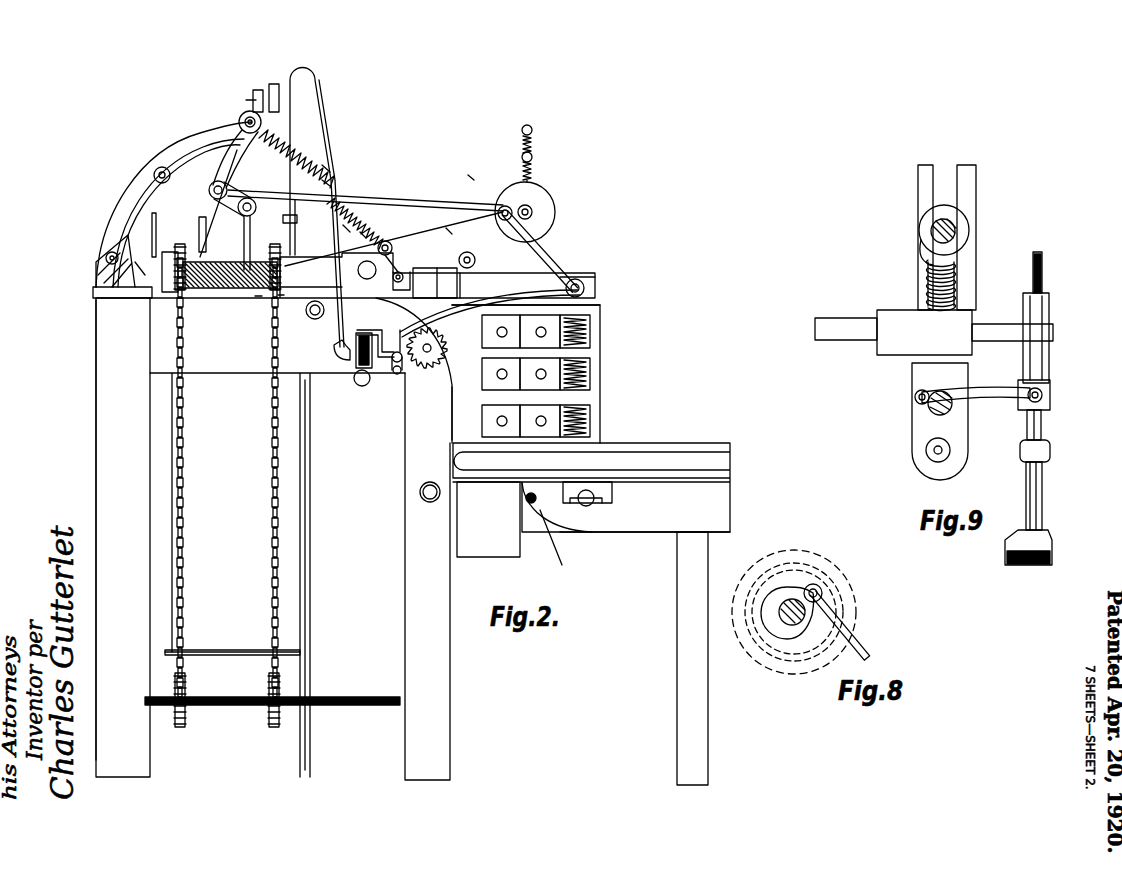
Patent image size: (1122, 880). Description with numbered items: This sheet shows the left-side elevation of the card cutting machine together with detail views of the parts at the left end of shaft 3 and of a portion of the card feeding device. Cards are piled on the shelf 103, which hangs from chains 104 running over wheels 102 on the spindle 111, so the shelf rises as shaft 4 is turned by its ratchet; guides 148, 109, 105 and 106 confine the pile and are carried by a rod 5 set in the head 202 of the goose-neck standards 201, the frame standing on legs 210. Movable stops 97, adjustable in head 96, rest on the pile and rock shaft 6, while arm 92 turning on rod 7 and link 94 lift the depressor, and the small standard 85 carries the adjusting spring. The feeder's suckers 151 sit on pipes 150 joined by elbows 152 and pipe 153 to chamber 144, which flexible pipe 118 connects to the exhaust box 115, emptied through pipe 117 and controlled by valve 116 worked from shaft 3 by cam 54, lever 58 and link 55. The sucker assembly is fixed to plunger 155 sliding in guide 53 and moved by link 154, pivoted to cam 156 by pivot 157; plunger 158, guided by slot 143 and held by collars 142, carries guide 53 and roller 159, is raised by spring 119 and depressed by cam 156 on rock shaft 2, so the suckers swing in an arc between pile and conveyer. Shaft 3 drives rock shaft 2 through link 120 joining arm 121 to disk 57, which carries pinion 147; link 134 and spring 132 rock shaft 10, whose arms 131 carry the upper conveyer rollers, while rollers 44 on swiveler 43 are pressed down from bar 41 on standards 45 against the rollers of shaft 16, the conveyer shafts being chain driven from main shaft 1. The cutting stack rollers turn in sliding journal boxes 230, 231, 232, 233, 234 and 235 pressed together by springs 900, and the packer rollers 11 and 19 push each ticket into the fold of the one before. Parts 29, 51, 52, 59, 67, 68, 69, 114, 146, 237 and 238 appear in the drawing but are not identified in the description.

In FIG. 2, the main shaft 1 is at (419, 495).
In FIG. 9, the rocking shaft 2 is at (932, 433).
In FIG. 2, the shaft 3 is at (532, 205).
In FIG. 8, the shaft 3 is at (792, 616).
In FIG. 2, the shaft 4 is at (316, 320).
In FIG. 2, the rod 5 is at (246, 118).
In FIG. 9, the rod 5 is at (960, 228).
In FIG. 2, the shaft 6 is at (156, 175).
In FIG. 2, the rod 7 is at (100, 258).
In FIG. 2, the rocker shaft 10 is at (280, 295).
In FIG. 2, the roller 11 is at (585, 506).
In FIG. 2, the shaft 16 is at (257, 296).
In FIG. 2, the roller 19 is at (552, 537).
In FIG. 2, the box 29 is at (480, 545).
In FIG. 2, the bar 41 is at (452, 387).
In FIG. 2, the swiveler 43 is at (403, 255).
In FIG. 2, the rollers 44 is at (448, 228).
In FIG. 2, the standards 45 is at (470, 175).
In FIG. 2, the lever 51 is at (552, 268).
In FIG. 2, the bed 52 is at (590, 278).
In FIG. 9, the guide 53 is at (895, 343).
In FIG. 2, the cam 54 is at (505, 213).
In FIG. 8, the cam 54 is at (790, 592).
In FIG. 2, the link 55 is at (548, 250).
In FIG. 8, the link 55 is at (858, 638).
In FIG. 2, the disk 57 is at (548, 203).
In FIG. 8, the disk 57 is at (817, 558).
In FIG. 2, the lever 58 is at (572, 275).
In FIG. 8, the groove 59 is at (787, 568).
In FIG. 2, the eye 67 is at (533, 130).
In FIG. 2, the spring 68 is at (535, 142).
In FIG. 2, the eye 69 is at (535, 158).
In FIG. 2, the small standard 85 is at (266, 100).
In FIG. 2, the arm 92 is at (140, 268).
In FIG. 2, the link 94 is at (157, 247).
In FIG. 2, the head 96 is at (325, 165).
In FIG. 2, the movable stops 97 is at (345, 225).
In FIG. 2, the wheels 102 is at (186, 723).
In FIG. 2, the shelf 103 is at (237, 655).
In FIG. 2, the chains 104 is at (180, 432).
In FIG. 2, the guides 105 is at (187, 160).
In FIG. 2, the guides 106 is at (168, 250).
In FIG. 2, the guides 109 is at (160, 228).
In FIG. 2, the spindle 111 is at (180, 303).
In FIG. 2, the crank 114 is at (402, 270).
In FIG. 2, the box 115 is at (350, 373).
In FIG. 2, the valve 116 is at (366, 372).
In FIG. 2, the pipe 117 is at (362, 392).
In FIG. 2, the flexible pipe 118 is at (320, 100).
In FIG. 9, the flexible pipe 118 is at (1043, 266).
In FIG. 9, the spring 119 is at (932, 282).
In FIG. 2, the link 120 is at (470, 205).
In FIG. 2, the arm 121 is at (316, 84).
In FIG. 2, the arms 131 is at (363, 232).
In FIG. 2, the spring 132 is at (325, 180).
In FIG. 2, the link 134 is at (470, 252).
In FIG. 9, the collars 142 is at (928, 232).
In FIG. 9, the slot 143 is at (935, 192).
In FIG. 9, the chamber 144 is at (1033, 358).
In FIG. 9, the spring end 146 is at (930, 267).
In FIG. 2, the pinion 147 is at (570, 214).
In FIG. 2, the guides 148 is at (312, 675).
In FIG. 9, the pipes 150 is at (1025, 490).
In FIG. 9, the suckers 151 is at (1005, 550).
In FIG. 2, the elbows 152 is at (318, 196).
In FIG. 9, the elbows 152 is at (1030, 447).
In FIG. 9, the pipe 153 is at (1040, 423).
In FIG. 9, the link 154 is at (995, 385).
In FIG. 9, the plunger 155 is at (993, 325).
In FIG. 9, the cam 156 is at (922, 420).
In FIG. 9, the pivot 157 is at (912, 398).
In FIG. 2, the plunger 158 is at (248, 100).
In FIG. 9, the plunger 158 is at (968, 262).
In FIG. 9, the roller 159 is at (932, 458).
In FIG. 2, the goose neck standards 201 is at (172, 153).
In FIG. 2, the head 202 is at (208, 127).
In FIG. 2, the legs 210 is at (97, 377).
In FIG. 2, the sliding journal box 230 is at (553, 316).
In FIG. 2, the sliding journal box 231 is at (513, 323).
In FIG. 2, the sliding journal box 232 is at (513, 368).
In FIG. 2, the sliding journal box 233 is at (551, 368).
In FIG. 2, the sliding journal box 234 is at (507, 413).
In FIG. 2, the sliding journal box 235 is at (550, 412).
In FIG. 2, the table 237 is at (645, 532).
In FIG. 2, the cord 238 is at (532, 505).
In FIG. 2, the springs 900 is at (590, 330).